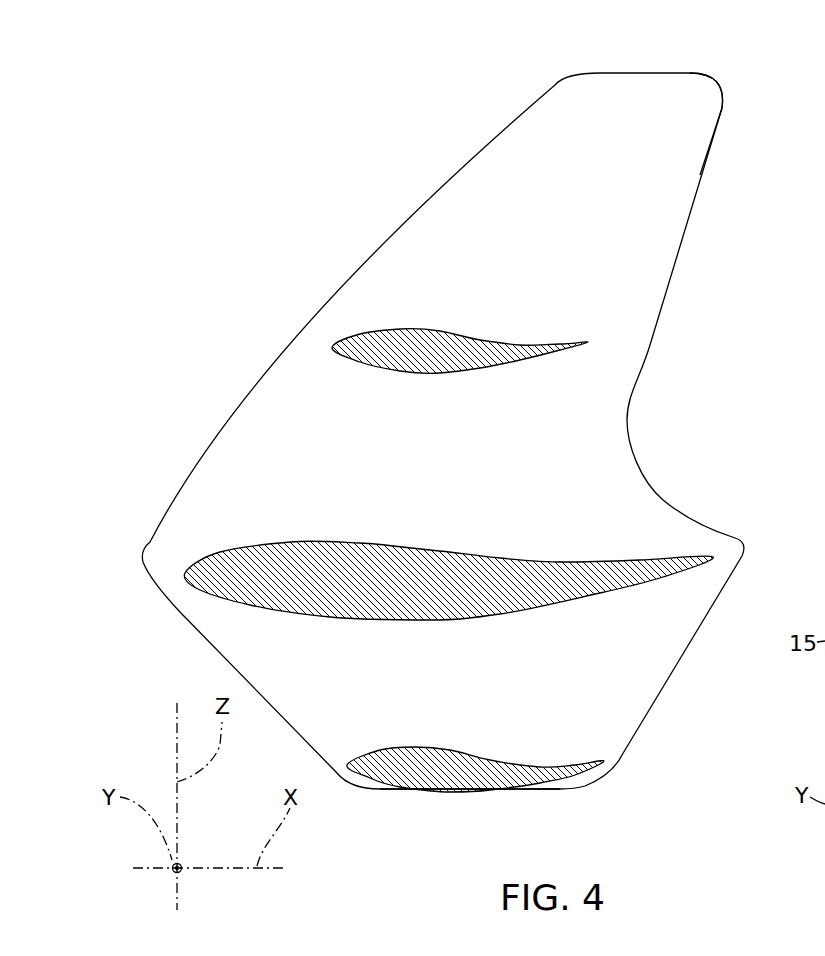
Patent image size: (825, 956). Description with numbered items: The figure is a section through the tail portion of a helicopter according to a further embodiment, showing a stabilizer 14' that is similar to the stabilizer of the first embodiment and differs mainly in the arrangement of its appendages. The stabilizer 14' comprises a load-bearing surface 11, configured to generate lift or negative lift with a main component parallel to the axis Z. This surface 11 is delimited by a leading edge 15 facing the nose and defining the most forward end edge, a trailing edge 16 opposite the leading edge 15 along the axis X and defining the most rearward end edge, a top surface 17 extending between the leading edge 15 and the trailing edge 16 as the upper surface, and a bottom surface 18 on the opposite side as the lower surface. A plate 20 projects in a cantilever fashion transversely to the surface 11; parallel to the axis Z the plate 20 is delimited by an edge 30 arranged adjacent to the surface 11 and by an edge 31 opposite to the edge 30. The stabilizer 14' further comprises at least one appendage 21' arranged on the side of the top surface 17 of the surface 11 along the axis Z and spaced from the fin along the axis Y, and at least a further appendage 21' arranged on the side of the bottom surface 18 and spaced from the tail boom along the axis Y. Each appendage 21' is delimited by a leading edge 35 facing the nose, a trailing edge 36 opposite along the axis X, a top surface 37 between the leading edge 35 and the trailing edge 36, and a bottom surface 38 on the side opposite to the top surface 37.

The plate 20 is at (605, 95).
The edge 31 is at (678, 73).
The stabilizer 14' is at (352, 217).
The leading edge 35 is at (327, 345).
The top surface 37 is at (445, 330).
The trailing edge 36 is at (592, 338).
The bottom surface 38 is at (427, 377).
The appendage 21' is at (640, 471).
The load-bearing surface 11 is at (580, 520).
The top surface 17 is at (368, 540).
The trailing edge 16 is at (703, 560).
The leading edge 15 is at (185, 572).
The bottom surface 18 is at (452, 620).
The edge 30 is at (373, 790).